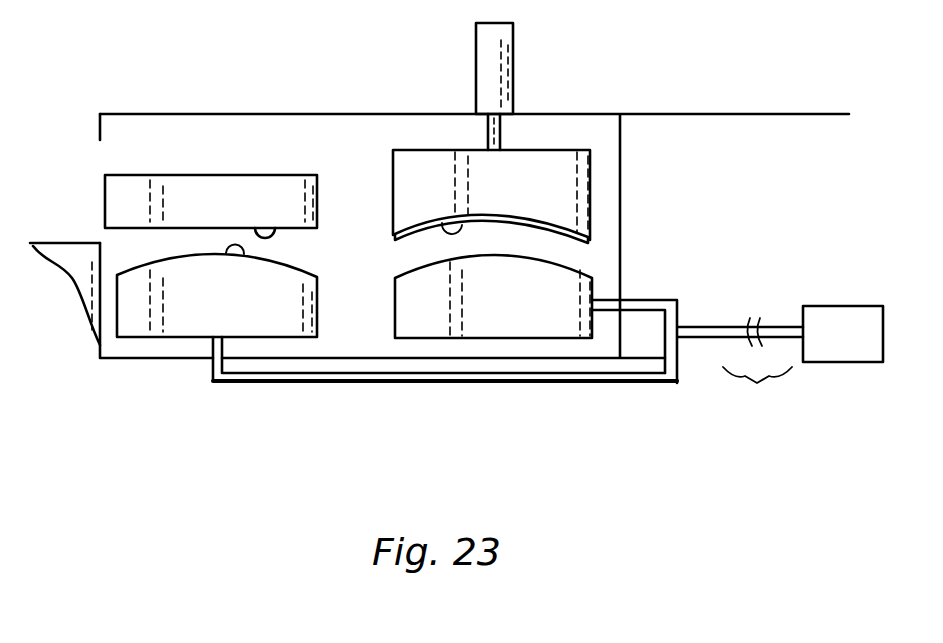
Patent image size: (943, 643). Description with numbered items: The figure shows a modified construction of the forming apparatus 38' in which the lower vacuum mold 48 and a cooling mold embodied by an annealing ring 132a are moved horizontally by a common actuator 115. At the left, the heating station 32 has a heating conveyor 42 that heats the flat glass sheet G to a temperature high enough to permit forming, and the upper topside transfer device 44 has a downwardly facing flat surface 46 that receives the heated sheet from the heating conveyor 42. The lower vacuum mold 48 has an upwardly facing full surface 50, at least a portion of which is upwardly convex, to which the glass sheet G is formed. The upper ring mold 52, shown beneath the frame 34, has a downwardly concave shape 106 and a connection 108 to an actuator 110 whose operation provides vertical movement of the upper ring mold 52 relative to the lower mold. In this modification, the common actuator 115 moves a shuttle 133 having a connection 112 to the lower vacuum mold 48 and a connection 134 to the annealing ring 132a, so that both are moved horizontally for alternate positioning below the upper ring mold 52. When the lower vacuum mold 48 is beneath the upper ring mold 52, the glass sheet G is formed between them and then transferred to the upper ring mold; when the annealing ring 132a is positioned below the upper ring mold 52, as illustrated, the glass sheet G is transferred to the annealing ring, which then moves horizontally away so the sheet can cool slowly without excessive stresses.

The heating station 32 is at (58, 150).
The frame 34 is at (300, 85).
The forming apparatus 38' is at (382, 337).
The heating conveyor 42 is at (66, 257).
The upper topside transfer device 44 is at (188, 172).
The flat surface 46 is at (272, 230).
The lower vacuum mold 48 is at (318, 308).
The full surface 50 is at (236, 256).
The upper ring mold 52 is at (598, 181).
The downwardly concave shape 106 is at (438, 225).
The connection 108 is at (499, 137).
The actuator 110 is at (491, 70).
The connection 112 is at (233, 383).
The common actuator 115 is at (838, 330).
The annealing ring 132a is at (600, 256).
The shuttle 133 is at (547, 386).
The connection 134 is at (645, 300).
The glass sheet G is at (428, 236).